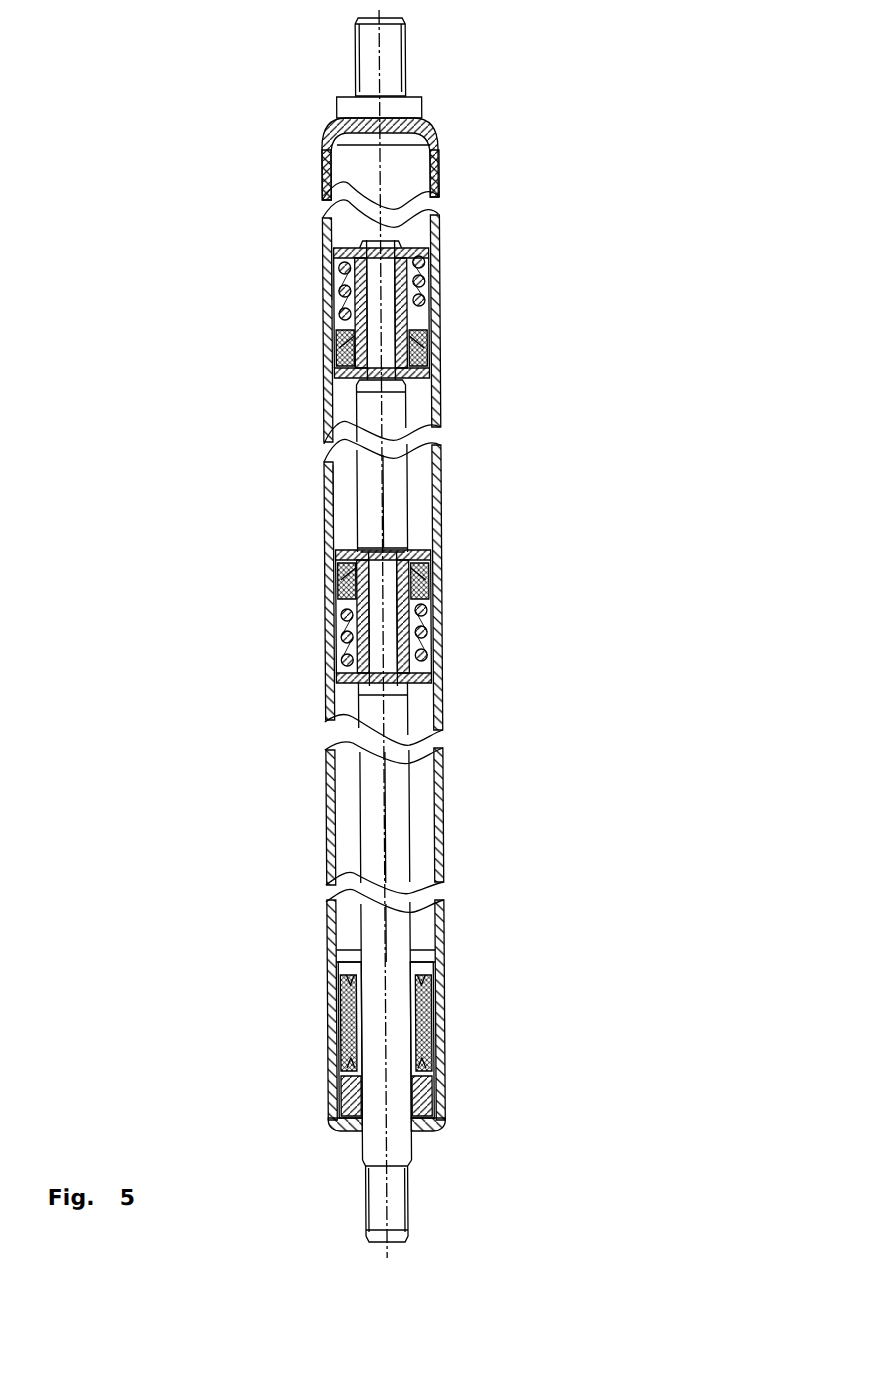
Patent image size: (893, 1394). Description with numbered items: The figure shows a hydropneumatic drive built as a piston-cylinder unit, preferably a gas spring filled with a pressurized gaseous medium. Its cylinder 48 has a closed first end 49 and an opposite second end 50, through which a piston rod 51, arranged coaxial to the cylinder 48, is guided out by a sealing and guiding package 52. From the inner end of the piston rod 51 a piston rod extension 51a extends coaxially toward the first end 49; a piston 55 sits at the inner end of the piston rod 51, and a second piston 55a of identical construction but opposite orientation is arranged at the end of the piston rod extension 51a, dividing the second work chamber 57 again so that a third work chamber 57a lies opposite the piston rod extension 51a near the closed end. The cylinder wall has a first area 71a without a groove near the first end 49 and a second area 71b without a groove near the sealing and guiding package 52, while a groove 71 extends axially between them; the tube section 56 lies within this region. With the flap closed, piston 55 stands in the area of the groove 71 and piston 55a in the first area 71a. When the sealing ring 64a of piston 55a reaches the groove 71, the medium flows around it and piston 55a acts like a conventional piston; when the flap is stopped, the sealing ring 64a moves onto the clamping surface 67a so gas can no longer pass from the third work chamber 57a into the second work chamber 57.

The cylinder 48 is at (324, 933).
The closed first end 49 is at (427, 127).
The second end 50 is at (438, 1125).
The piston rod 51 is at (398, 1147).
The piston rod extension 51a is at (394, 497).
The sealing and guiding package 52 is at (515, 1115).
The piston 55 is at (483, 680).
The piston 55a is at (408, 310).
The tube section 56 is at (339, 852).
The second work chamber 57 is at (340, 455).
The third work chamber 57a is at (341, 230).
The sealing ring 64a is at (336, 357).
The clamping surface 67a is at (336, 330).
The groove 71 is at (427, 708).
The first area 71a is at (430, 395).
The second area 71b is at (434, 913).